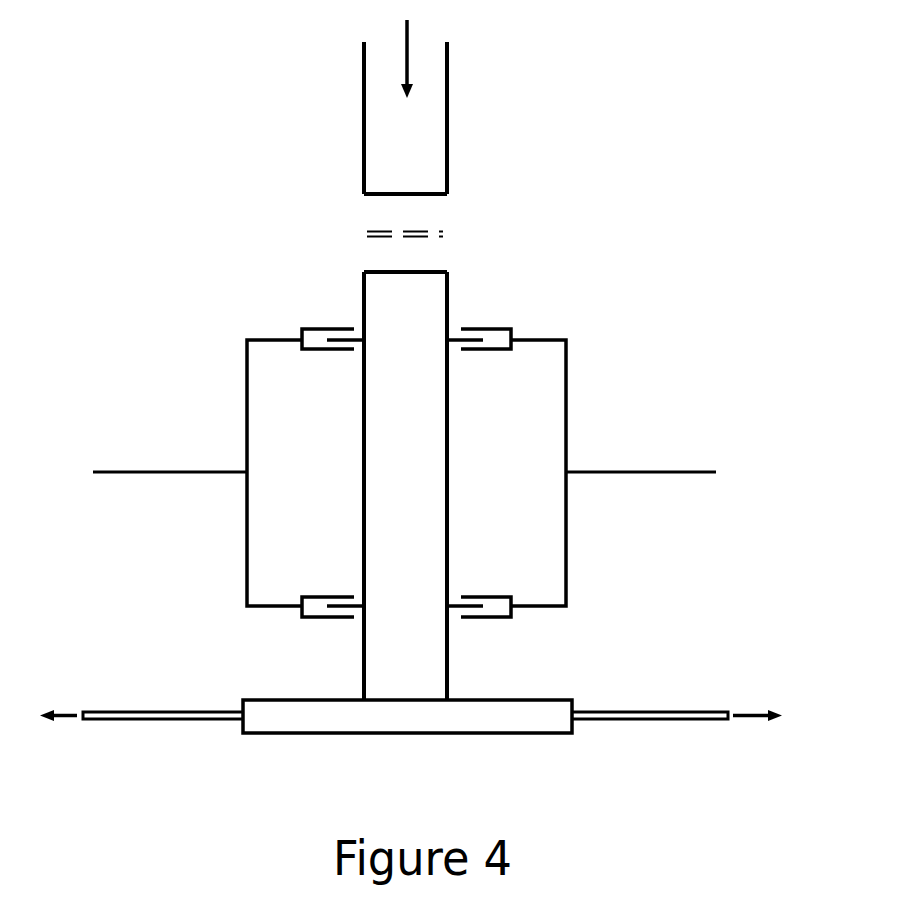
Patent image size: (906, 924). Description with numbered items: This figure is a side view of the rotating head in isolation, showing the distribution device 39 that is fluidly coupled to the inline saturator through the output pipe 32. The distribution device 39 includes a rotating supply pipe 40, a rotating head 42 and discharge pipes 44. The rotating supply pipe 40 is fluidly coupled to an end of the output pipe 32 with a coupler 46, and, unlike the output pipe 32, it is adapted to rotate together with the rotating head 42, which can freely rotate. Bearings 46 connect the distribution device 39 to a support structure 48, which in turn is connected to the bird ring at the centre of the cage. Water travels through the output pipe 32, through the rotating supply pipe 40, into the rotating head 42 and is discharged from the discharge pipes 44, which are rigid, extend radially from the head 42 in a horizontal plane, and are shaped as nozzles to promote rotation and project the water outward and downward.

The distribution device 39 is at (207, 179).
The output pipe 32 is at (394, 160).
The bearings 46 is at (435, 213).
The rotating supply pipe 40 is at (397, 457).
The support structure 48 is at (404, 473).
The rotating head 42 is at (407, 716).
The discharge pipes 44 is at (411, 704).